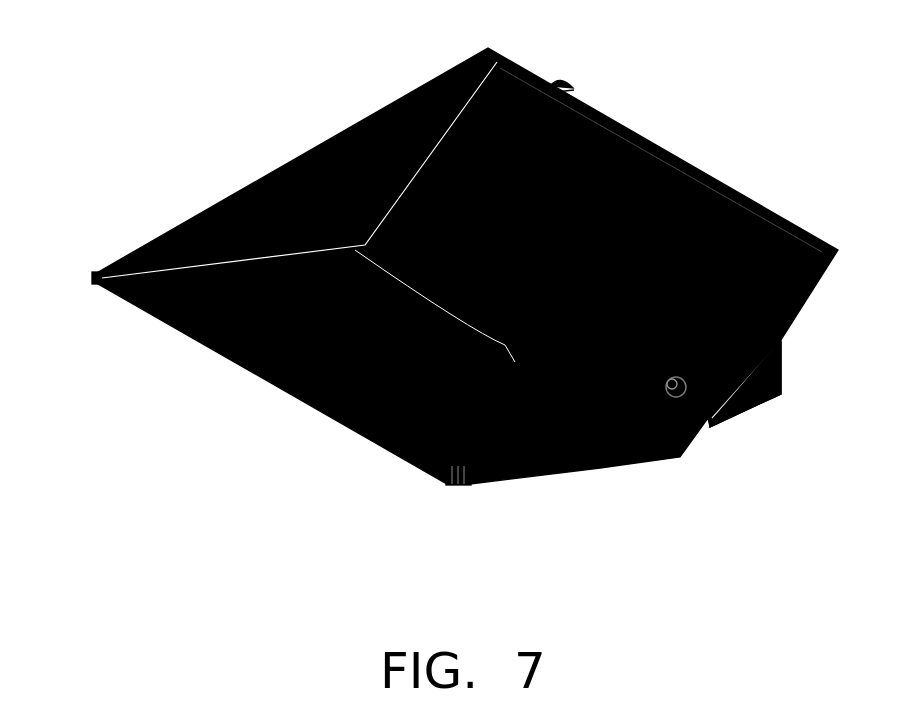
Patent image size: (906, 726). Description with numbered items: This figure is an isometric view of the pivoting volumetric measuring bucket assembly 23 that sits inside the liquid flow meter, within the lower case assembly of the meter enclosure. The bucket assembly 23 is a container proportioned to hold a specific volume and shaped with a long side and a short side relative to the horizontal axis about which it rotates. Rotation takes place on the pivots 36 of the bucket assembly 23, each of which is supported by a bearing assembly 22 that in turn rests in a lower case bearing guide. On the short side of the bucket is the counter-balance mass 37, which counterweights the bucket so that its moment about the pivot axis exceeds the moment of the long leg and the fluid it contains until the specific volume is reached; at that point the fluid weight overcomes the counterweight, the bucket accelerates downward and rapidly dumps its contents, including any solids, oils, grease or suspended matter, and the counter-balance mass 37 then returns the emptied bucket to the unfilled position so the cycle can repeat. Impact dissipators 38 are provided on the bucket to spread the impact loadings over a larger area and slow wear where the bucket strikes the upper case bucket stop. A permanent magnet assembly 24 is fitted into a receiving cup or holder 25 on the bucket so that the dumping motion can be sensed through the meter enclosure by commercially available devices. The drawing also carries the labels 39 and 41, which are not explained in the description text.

The bearing assembly 22 is at (660, 428).
The volumetric measuring bucket assembly 23 is at (672, 142).
The permanent magnet assembly 24 is at (566, 72).
The receiving cup or holder 25 is at (575, 90).
The pivots 36 is at (693, 410).
The counter-balance mass 37 is at (782, 339).
The impact dissipators 38 is at (100, 268).
The rib 39 is at (322, 142).
The flange 41 is at (760, 415).